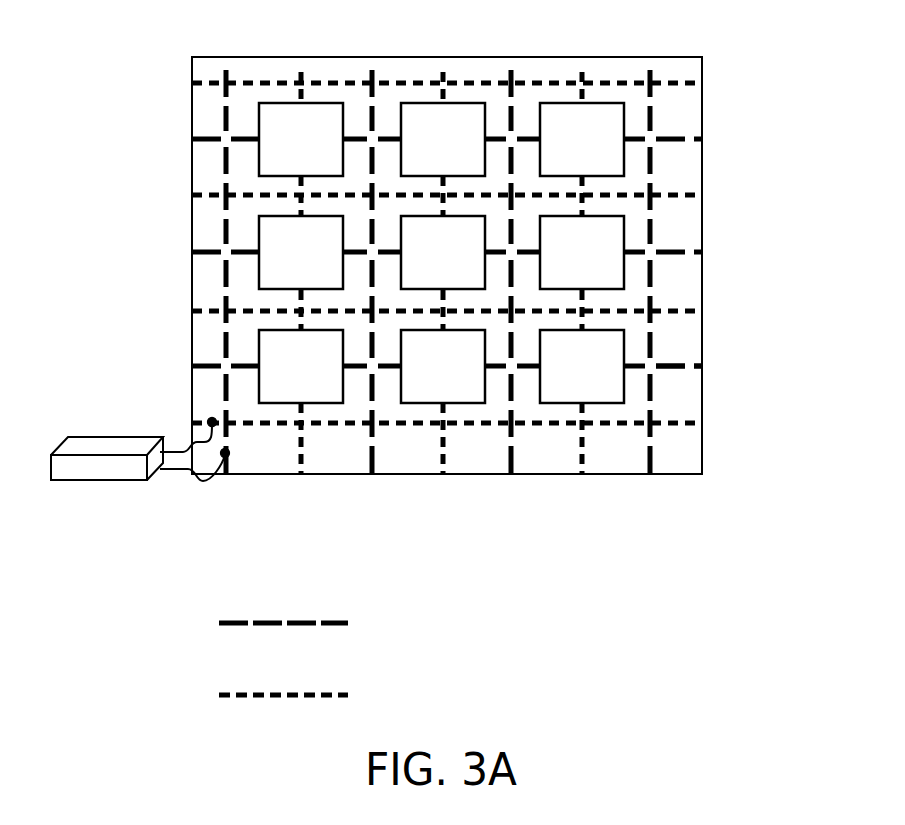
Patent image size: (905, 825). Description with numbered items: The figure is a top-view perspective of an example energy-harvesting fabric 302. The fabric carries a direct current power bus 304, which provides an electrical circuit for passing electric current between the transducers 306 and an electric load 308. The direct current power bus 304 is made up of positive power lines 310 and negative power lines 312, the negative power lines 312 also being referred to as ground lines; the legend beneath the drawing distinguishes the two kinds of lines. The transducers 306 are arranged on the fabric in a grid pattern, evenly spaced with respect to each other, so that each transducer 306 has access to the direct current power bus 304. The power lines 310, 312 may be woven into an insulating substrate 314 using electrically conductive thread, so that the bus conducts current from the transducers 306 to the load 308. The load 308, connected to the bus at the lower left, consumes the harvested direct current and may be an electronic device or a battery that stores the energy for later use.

The energy-harvesting fabric 302 is at (408, 474).
The direct current power bus 304 is at (675, 82).
The transducer 306 is at (277, 153).
The electric load 308 is at (102, 437).
The positive power lines 310 is at (461, 625).
The negative power lines 312 is at (466, 697).
The insulating substrate 314 is at (682, 397).